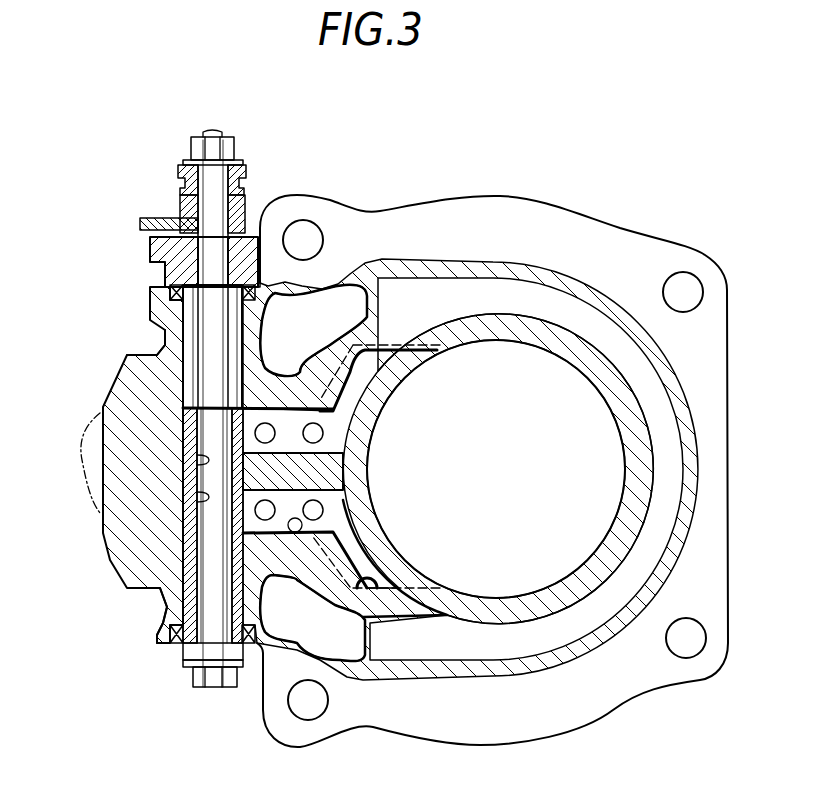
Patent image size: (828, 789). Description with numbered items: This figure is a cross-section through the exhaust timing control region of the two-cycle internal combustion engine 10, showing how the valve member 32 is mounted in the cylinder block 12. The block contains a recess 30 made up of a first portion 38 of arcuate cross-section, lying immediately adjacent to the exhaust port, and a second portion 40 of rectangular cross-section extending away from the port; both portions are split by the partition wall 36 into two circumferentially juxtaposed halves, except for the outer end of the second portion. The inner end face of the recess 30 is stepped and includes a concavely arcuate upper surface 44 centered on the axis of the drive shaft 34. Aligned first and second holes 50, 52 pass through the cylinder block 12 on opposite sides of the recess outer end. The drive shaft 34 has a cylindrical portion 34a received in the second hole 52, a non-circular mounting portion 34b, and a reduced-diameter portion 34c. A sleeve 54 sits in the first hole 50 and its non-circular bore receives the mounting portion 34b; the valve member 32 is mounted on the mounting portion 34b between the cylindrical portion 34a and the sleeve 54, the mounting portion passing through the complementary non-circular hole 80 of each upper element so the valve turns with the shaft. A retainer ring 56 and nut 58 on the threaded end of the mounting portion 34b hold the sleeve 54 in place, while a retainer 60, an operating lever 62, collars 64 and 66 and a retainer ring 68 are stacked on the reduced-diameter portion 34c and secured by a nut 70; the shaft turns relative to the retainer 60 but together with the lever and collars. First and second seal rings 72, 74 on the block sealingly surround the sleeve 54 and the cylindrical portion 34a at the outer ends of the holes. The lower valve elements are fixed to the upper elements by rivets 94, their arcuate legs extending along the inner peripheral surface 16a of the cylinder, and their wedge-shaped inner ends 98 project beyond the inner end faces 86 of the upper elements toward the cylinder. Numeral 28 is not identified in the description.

The two-cycle internal combustion engine 10 is at (470, 172).
The cylinder block 12 is at (547, 268).
The inner peripheral surface of the cylinder 16a is at (472, 600).
The shaft bushing 28 is at (167, 458).
The recess 30 is at (290, 537).
The valve member 32 is at (177, 527).
The drive shaft 34 is at (217, 650).
The cylindrical portion 34a is at (155, 340).
The mounting portion 34b is at (190, 440).
The reduced-diameter portion 34c is at (200, 262).
The partition wall 36 is at (360, 466).
The first portion of the recess 38 is at (372, 388).
The second portion of the recess 40 is at (312, 425).
The upper surface 44 is at (370, 358).
The first hole 50 is at (163, 603).
The second hole 52 is at (150, 375).
The sleeve 54 is at (192, 650).
The retainer ring 56 is at (188, 672).
The nut 58 is at (200, 688).
The retainer 60 is at (150, 242).
The operating lever 62 is at (150, 220).
The collar 64 is at (246, 205).
The collar 66 is at (246, 172).
The retainer ring 68 is at (188, 160).
The nut 70 is at (224, 148).
The first seal ring 72 is at (172, 637).
The second seal ring 74 is at (170, 293).
The hole 80 is at (200, 498).
The inner end faces of the upper elements 86 is at (382, 405).
The rivets 94 is at (265, 428).
The inner ends of the lower elements 98 is at (380, 440).